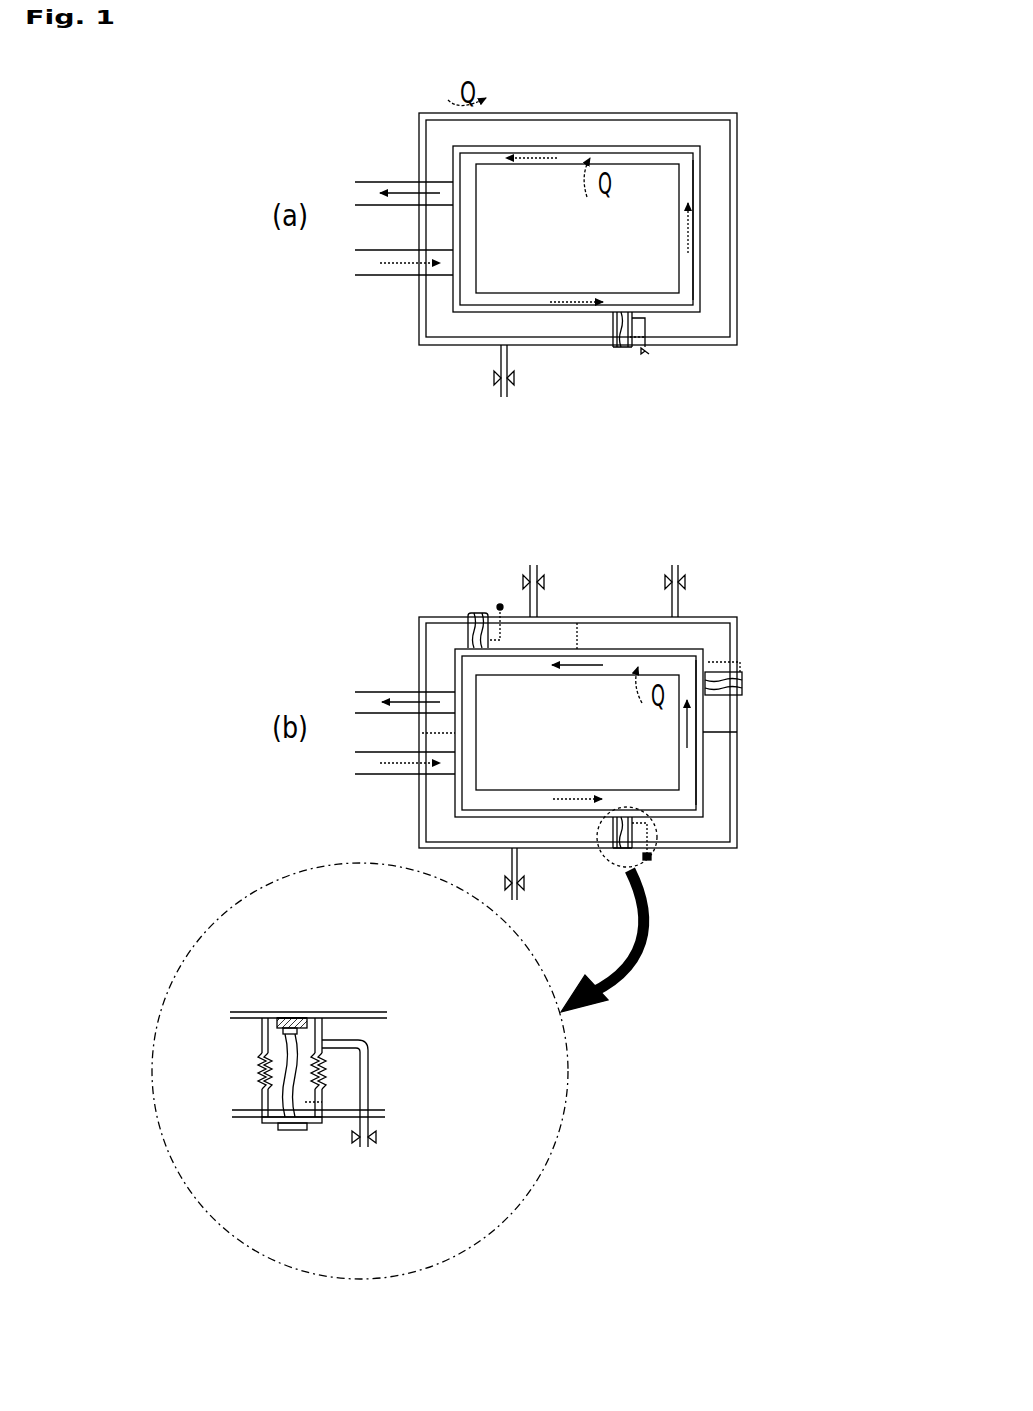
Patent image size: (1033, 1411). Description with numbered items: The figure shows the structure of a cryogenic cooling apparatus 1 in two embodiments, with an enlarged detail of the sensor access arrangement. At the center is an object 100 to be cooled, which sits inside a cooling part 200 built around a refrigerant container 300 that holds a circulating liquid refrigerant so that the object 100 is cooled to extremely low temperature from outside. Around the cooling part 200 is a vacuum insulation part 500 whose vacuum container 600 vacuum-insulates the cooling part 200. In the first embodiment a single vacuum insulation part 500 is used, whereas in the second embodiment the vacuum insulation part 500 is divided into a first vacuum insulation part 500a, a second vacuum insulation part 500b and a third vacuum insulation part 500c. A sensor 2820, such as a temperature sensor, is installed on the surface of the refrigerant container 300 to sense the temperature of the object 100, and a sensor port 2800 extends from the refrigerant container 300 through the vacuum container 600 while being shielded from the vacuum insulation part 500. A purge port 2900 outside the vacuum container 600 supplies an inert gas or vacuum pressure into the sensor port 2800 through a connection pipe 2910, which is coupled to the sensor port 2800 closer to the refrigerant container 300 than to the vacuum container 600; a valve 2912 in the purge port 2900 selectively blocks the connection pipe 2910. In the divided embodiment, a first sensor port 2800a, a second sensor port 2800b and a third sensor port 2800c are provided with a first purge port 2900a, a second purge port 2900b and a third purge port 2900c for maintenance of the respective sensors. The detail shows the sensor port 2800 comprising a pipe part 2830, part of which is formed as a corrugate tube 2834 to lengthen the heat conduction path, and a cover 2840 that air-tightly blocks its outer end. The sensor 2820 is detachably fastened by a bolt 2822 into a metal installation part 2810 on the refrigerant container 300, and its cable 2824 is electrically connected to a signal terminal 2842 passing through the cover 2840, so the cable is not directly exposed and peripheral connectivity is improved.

The cryogenic cooling apparatus 1 is at (398, 108).
The object 100 is at (658, 205).
The cooling part 200 is at (637, 155).
The refrigerant container 300 is at (678, 146).
The vacuum insulation part 500 is at (575, 130).
The first vacuum insulation part 500a is at (688, 827).
The second vacuum insulation part 500b is at (723, 628).
The third vacuum insulation part 500c is at (430, 673).
The vacuum container 600 is at (540, 115).
The sensor port 2800 is at (609, 350).
The first sensor port 2800a is at (613, 858).
The second sensor port 2800b is at (758, 682).
The third sensor port 2800c is at (474, 603).
The installation part 2810 is at (300, 1020).
The sensor 2820 is at (621, 315).
The bolt 2822 is at (323, 1040).
The cable 2824 is at (625, 350).
The pipe part 2830 is at (613, 336).
The corrugate tube 2834 is at (262, 1075).
The cover 2840 is at (630, 345).
The signal terminal 2842 is at (287, 1130).
The purge port 2900 is at (642, 352).
The first purge port 2900a is at (640, 851).
The second purge port 2900b is at (745, 663).
The third purge port 2900c is at (496, 601).
The connection pipe 2910 is at (645, 330).
The valve 2912 is at (650, 348).